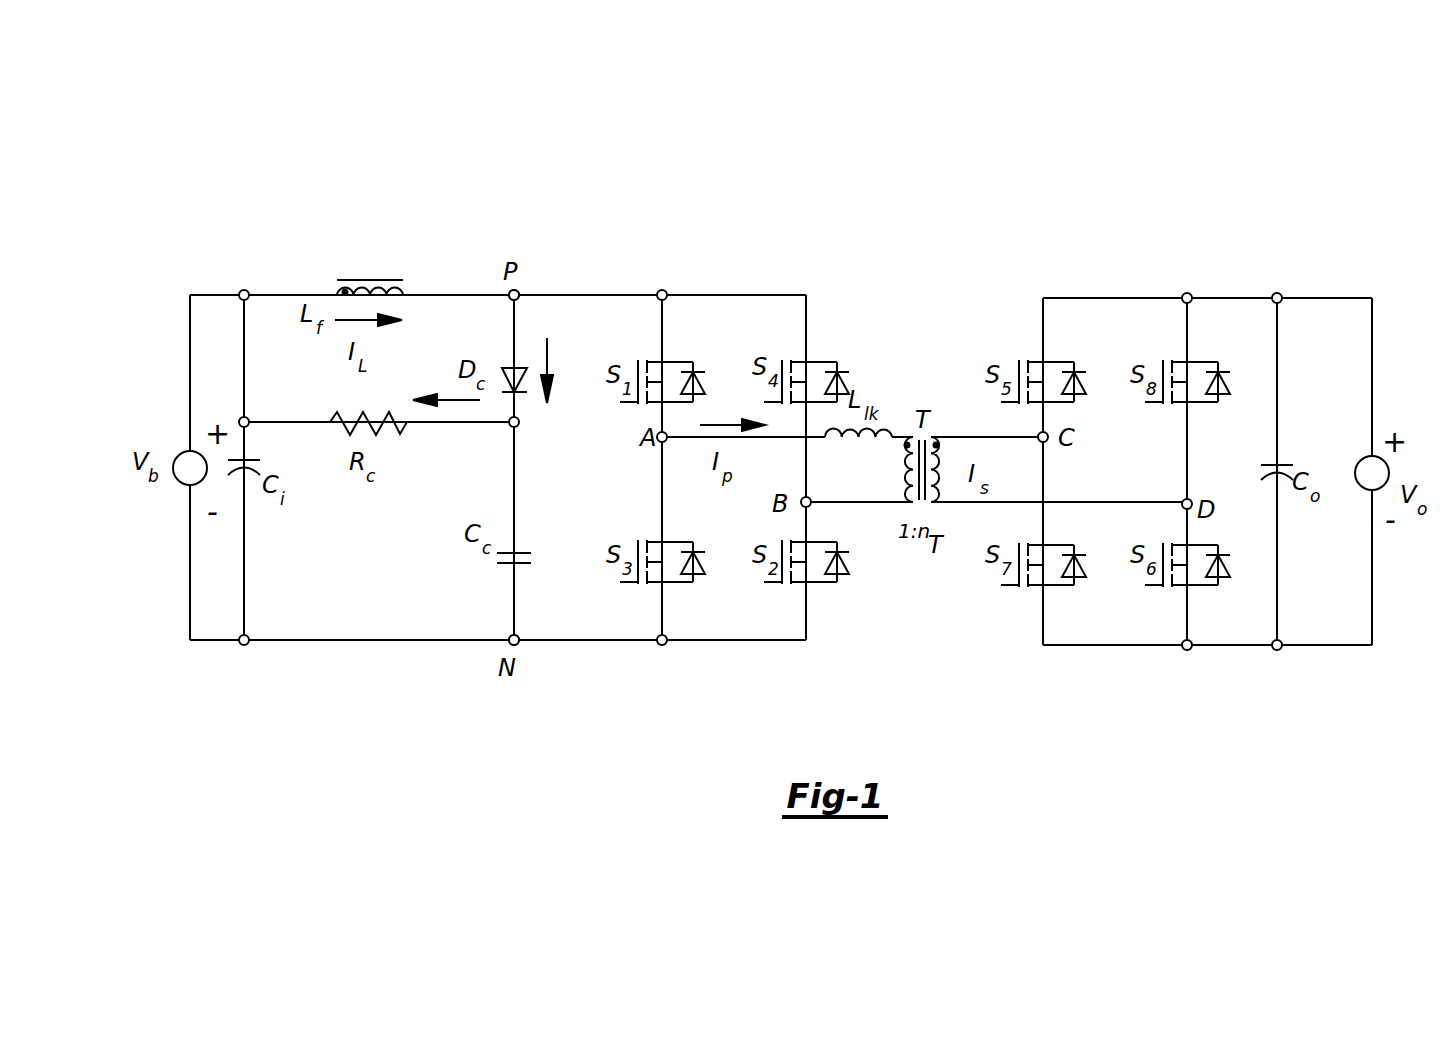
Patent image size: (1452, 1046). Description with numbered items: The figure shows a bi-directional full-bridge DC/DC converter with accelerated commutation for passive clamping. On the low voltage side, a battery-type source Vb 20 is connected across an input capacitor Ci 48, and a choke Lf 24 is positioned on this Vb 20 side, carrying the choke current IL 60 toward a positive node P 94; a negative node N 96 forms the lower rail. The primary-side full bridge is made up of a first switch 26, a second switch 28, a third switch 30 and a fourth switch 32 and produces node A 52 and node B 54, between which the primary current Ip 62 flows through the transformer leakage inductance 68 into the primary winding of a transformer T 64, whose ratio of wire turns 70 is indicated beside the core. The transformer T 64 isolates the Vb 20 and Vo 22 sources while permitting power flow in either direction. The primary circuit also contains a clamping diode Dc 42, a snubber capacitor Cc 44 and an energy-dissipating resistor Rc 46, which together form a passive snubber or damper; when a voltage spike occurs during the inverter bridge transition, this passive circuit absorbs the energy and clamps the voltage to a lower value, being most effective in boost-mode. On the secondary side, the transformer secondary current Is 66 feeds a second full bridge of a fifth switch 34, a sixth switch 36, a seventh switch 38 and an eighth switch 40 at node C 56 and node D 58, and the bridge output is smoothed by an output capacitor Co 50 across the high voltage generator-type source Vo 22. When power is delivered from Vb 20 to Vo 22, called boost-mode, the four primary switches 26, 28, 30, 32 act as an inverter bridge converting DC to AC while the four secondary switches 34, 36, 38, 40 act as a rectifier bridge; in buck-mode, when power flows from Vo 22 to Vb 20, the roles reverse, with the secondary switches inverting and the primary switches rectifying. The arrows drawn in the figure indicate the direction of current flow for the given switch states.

The Vb 20 is at (150, 430).
The Vo 22 is at (1418, 448).
The choke Lf 24 is at (304, 293).
The switch S1 26 is at (628, 366).
The switch S2 28 is at (750, 570).
The switch S3 30 is at (612, 568).
The switch S4 32 is at (770, 357).
The switch S5 34 is at (1000, 366).
The switch S6 36 is at (1130, 578).
The switch S7 38 is at (995, 572).
The switch S8 40 is at (1146, 366).
The clamping diode Dc 42 is at (480, 368).
The snubber (clamping) capacitor Cc 44 is at (478, 552).
The resistor Rc 46 is at (357, 478).
The input capacitor Ci 48 is at (280, 500).
The output capacitor Co 50 is at (1300, 484).
The node A 52 is at (640, 437).
The node B 54 is at (783, 475).
The node C 56 is at (1078, 440).
The node D 58 is at (1208, 510).
The choke current IL 60 is at (350, 352).
The primary current Ip 62 is at (712, 470).
The transformer T 64 is at (920, 400).
The transformer secondary current Is 66 is at (978, 488).
The transformer leakage inductance Llk 68 is at (867, 396).
The ratio of transformer wire turns 1:n 70 is at (928, 548).
The positive node P 94 is at (512, 282).
The negative node N 96 is at (497, 659).